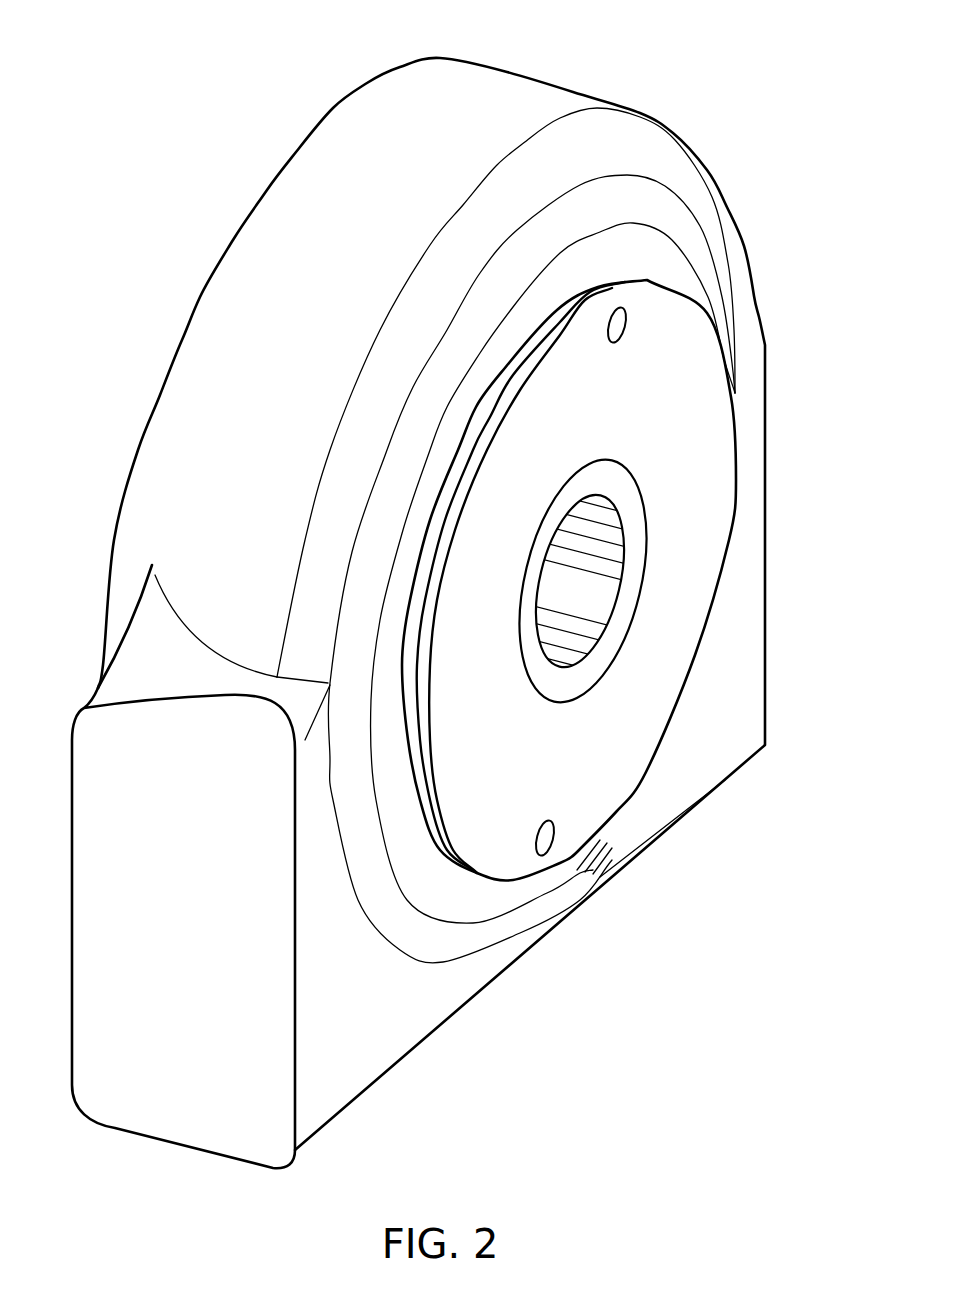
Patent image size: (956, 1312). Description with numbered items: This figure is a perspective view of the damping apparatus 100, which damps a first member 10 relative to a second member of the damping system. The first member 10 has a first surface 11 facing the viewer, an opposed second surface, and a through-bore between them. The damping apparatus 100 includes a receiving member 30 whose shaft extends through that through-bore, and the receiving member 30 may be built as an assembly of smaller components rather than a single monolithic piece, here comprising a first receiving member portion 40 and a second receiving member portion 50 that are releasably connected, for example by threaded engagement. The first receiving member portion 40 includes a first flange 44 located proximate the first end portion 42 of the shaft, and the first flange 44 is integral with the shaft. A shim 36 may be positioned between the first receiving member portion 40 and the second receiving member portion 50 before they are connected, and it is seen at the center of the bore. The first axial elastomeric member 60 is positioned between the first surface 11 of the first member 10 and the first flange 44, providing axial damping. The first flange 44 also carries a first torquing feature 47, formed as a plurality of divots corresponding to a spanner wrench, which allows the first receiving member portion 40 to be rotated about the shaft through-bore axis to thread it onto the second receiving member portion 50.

The damping apparatus 100 is at (448, 598).
The first member 10 is at (506, 84).
The first surface 11 is at (710, 307).
The receiving member 30 is at (639, 843).
The shim 36 is at (599, 557).
The first receiving member portion 40 is at (687, 648).
The first end portion 42 is at (540, 569).
The first flange 44 is at (702, 537).
The first torquing feature 47 is at (623, 335).
The second receiving member portion 50 is at (547, 677).
The first axial elastomeric member 60 is at (427, 822).